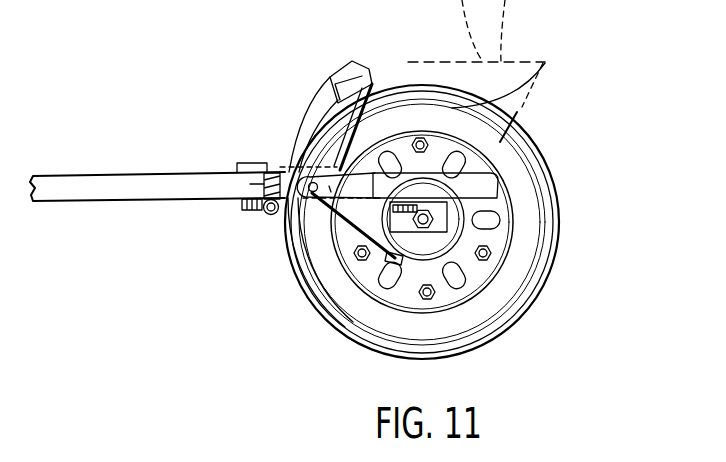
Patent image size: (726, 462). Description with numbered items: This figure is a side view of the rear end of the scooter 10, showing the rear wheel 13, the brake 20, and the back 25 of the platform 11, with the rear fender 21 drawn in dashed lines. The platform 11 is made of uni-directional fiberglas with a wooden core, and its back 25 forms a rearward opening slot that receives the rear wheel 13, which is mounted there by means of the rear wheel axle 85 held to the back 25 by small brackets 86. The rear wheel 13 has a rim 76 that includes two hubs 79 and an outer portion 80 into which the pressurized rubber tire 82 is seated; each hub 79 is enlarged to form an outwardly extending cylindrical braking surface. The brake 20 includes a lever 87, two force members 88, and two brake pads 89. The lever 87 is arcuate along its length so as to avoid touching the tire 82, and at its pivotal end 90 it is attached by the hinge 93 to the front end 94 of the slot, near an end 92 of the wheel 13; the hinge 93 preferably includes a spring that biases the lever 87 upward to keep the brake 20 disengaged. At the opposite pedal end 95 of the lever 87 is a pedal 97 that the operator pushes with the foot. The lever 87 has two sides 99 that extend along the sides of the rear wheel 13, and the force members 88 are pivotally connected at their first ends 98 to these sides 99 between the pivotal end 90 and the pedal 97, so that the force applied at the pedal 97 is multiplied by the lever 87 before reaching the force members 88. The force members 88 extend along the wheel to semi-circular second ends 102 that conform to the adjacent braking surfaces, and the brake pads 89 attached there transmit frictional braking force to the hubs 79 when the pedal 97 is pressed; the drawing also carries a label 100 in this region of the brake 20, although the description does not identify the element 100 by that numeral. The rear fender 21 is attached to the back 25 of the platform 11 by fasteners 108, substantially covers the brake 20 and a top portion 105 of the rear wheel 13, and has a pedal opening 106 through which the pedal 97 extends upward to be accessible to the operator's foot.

The scooter 10 is at (130, 207).
The platform 11 is at (80, 203).
The rear wheel 13 is at (536, 300).
The brake 20 is at (300, 262).
The rear fender 21 is at (483, 31).
The back 25 is at (208, 172).
The rim 76 is at (478, 330).
The hubs 79 is at (452, 302).
The outer portion 80 is at (392, 310).
The rubber tire 82 is at (566, 170).
The rear wheel axle 85 is at (434, 224).
The brackets 86 is at (498, 201).
The lever 87 is at (320, 100).
The force members 88 is at (322, 265).
The brake pads 89 is at (370, 300).
The pivotal end 90 is at (300, 165).
The end 92 is at (266, 214).
The hinge 93 is at (244, 210).
The front end 94 is at (245, 188).
The pedal end 95 is at (371, 63).
The pedal 97 is at (343, 66).
The first ends 98 is at (327, 173).
The sides 99 is at (358, 132).
The brake lining 100 is at (348, 290).
The second ends 102 is at (305, 280).
The top portion 105 is at (542, 62).
The pedal opening 106 is at (374, 62).
The fasteners 108 is at (250, 170).